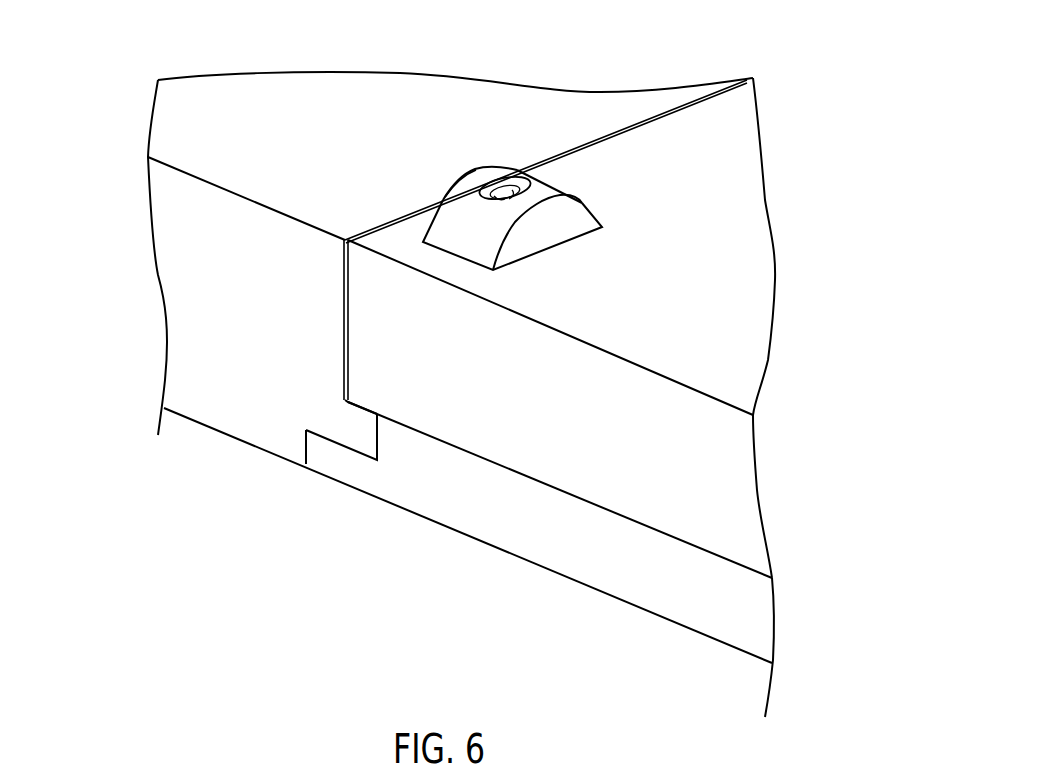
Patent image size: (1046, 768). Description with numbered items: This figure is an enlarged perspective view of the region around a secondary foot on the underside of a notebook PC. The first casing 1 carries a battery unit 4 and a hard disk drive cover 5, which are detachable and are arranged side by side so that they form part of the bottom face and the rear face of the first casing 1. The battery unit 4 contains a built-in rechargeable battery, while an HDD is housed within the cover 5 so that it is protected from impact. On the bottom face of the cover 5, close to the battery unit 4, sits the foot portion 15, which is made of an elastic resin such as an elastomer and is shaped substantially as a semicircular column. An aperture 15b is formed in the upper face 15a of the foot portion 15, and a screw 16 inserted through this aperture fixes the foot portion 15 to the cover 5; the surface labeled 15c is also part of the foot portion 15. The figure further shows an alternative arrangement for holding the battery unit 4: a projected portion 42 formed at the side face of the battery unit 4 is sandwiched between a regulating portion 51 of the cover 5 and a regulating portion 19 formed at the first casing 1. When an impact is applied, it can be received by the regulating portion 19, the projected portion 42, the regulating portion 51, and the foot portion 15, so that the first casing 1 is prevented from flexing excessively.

The first casing 1 is at (730, 618).
The battery unit 4 is at (207, 128).
The hard disk drive cover 5 is at (723, 352).
The foot portion 15 is at (620, 141).
The upper face 15a is at (462, 205).
The aperture 15b is at (497, 193).
The second inclined surface 15c is at (552, 215).
The screw 16 is at (510, 188).
The regulating portion 19 is at (321, 426).
The projected portion 42 is at (358, 437).
The regulating portion 51 is at (355, 406).